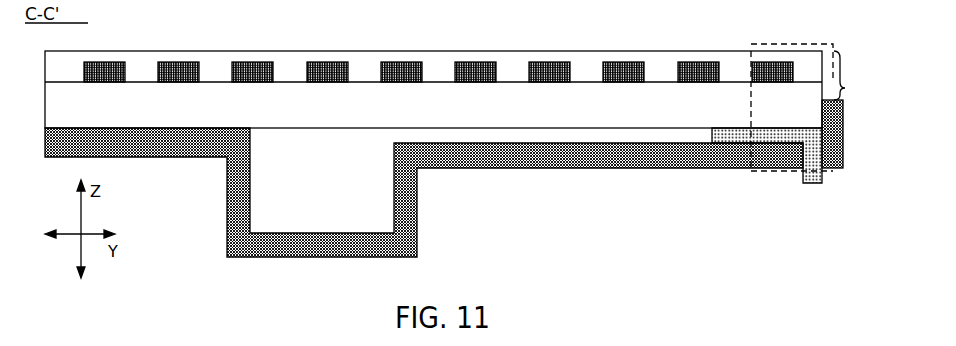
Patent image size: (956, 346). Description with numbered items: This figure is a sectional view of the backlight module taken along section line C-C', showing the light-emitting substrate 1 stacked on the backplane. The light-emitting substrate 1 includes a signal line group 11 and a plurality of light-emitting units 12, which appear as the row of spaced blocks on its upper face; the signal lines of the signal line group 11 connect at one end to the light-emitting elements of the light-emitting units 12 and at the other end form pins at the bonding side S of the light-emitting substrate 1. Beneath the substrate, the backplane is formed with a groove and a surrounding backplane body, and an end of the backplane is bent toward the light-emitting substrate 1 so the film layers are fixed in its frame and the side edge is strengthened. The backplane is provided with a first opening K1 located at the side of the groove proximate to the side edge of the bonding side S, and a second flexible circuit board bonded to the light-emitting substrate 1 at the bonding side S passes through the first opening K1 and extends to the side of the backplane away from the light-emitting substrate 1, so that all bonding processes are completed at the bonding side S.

The signal line group 11 is at (350, 101).
The light-emitting unit 12 is at (702, 63).
The first opening K1 is at (800, 155).
The bonding side S is at (833, 138).
The light-emitting substrate 1 is at (805, 107).